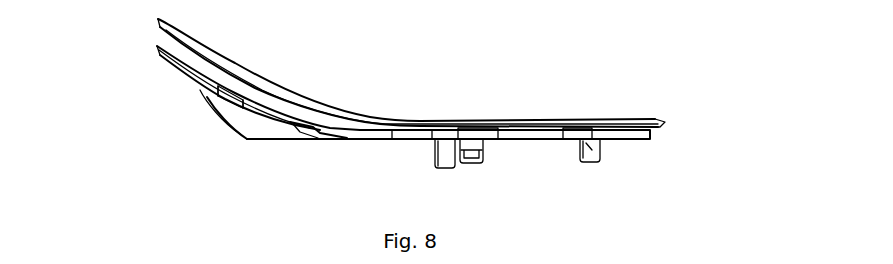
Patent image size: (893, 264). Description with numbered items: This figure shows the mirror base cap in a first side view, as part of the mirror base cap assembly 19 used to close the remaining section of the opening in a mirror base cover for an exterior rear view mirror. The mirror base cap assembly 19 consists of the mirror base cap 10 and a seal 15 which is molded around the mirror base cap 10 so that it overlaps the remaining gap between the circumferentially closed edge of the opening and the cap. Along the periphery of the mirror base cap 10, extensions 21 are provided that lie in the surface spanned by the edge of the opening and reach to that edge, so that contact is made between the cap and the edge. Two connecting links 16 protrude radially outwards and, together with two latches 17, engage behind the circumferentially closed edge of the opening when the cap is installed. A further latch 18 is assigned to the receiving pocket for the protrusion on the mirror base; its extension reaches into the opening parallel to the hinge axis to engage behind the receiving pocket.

The mirror base cap 10 is at (243, 125).
The seal 15 is at (293, 110).
The connecting links 16 is at (158, 57).
The latches 17 is at (447, 160).
The latch 18 is at (600, 158).
The mirror base cap assembly 19 is at (484, 105).
The extensions 21 is at (213, 110).